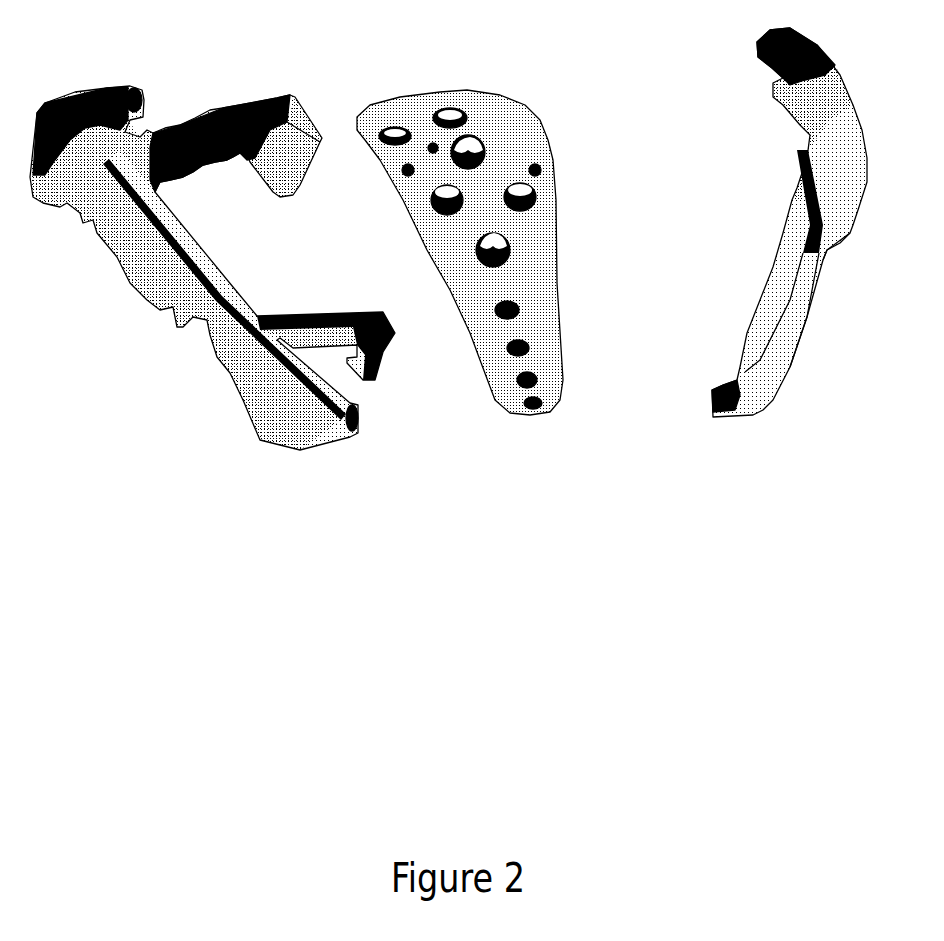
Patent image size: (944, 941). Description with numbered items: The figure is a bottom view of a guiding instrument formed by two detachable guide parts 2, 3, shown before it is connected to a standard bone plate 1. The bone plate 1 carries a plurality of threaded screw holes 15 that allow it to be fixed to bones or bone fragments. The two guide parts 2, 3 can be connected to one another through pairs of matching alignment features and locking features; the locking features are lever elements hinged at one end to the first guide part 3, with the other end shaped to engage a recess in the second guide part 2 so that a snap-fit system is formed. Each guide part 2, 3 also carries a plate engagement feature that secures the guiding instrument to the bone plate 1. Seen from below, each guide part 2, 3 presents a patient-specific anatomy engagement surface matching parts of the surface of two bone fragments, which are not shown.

The bone plate 1 is at (491, 219).
The guide part of a guiding instrument 2 is at (752, 222).
The guide part of a guiding instrument 3 is at (233, 268).
The screw hole 15 is at (400, 134).